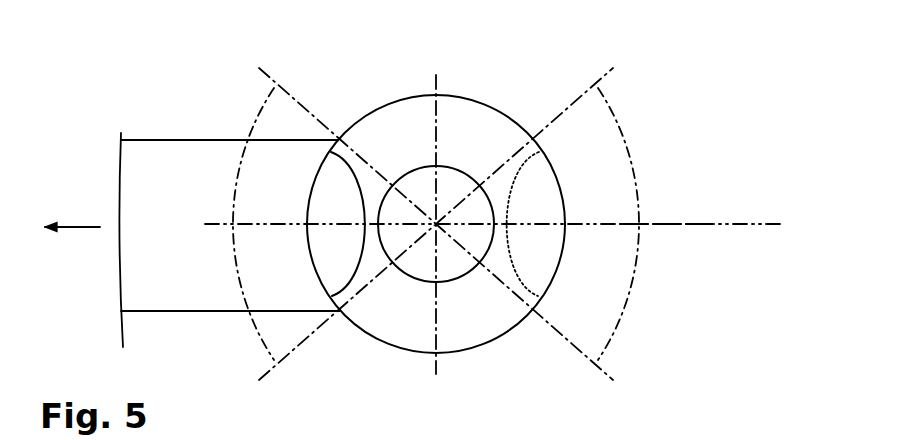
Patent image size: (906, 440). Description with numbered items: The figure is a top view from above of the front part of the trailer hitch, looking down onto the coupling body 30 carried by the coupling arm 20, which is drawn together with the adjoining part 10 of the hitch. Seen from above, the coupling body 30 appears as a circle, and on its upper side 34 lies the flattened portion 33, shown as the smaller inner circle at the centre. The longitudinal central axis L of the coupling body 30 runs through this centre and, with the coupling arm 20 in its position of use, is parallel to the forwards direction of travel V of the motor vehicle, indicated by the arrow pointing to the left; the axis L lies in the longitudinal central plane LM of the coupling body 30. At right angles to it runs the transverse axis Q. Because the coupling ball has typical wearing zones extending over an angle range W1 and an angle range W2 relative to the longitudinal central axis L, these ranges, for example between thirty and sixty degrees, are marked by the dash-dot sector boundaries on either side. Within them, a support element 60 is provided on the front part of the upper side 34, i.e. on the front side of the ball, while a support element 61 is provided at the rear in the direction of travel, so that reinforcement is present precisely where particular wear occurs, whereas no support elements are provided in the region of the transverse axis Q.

The first workpiece 10 is at (208, 313).
The coupling arm 20 is at (153, 140).
The coupling body 30 is at (435, 197).
The flattened portion 33 is at (442, 178).
The upper side 34 is at (454, 99).
The support element 60 is at (342, 192).
The support element 61 is at (548, 188).
The angle range W1 is at (234, 185).
The angle range W2 is at (623, 128).
The forwards direction of travel V is at (73, 226).
The longitudinal central axis L is at (743, 223).
The longitudinal central plane LM is at (692, 223).
The transverse axis Q is at (437, 374).